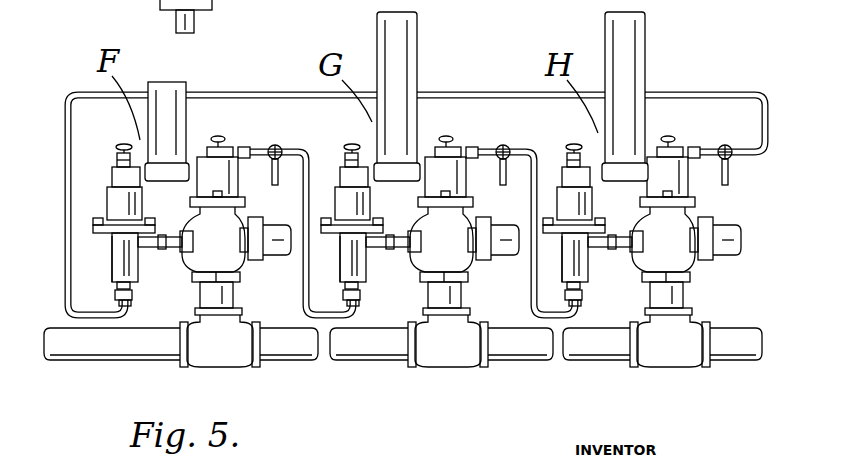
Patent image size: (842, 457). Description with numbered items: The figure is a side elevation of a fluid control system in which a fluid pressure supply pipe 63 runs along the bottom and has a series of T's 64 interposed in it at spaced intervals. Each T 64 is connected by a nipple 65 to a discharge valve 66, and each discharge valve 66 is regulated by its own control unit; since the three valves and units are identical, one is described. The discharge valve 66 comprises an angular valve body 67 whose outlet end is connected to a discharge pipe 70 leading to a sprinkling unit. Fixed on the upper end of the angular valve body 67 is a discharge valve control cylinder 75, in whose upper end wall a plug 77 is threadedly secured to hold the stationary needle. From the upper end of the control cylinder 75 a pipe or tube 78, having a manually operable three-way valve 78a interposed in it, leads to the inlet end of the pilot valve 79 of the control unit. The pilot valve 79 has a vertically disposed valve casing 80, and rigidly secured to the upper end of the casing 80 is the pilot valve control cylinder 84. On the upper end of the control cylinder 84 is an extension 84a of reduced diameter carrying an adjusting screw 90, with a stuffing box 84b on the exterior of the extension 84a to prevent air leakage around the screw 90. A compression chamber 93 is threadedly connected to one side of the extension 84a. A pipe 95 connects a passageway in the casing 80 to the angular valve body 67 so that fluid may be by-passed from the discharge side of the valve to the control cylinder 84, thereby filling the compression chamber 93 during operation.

The fluid pressure supply pipe 63 is at (375, 340).
The T 64 is at (445, 341).
The nipple 65 is at (218, 297).
The discharge valve 66 is at (190, 265).
The angular valve body 67 is at (437, 239).
The discharge pipe 70 is at (250, 256).
The discharge valve control cylinder 75 is at (442, 177).
The plug 77 is at (453, 125).
The pipe or tube 78 is at (176, 22).
The three-way valve 78a is at (290, 138).
The pilot valve 79 is at (110, 240).
The valve casing 80 is at (124, 256).
The pilot valve control cylinder 84 is at (125, 206).
The extension 84a is at (112, 178).
The stuffing box 84b is at (116, 163).
The adjusting screw 90 is at (125, 143).
The compression chamber 93 is at (165, 97).
The pipe 95 is at (162, 248).